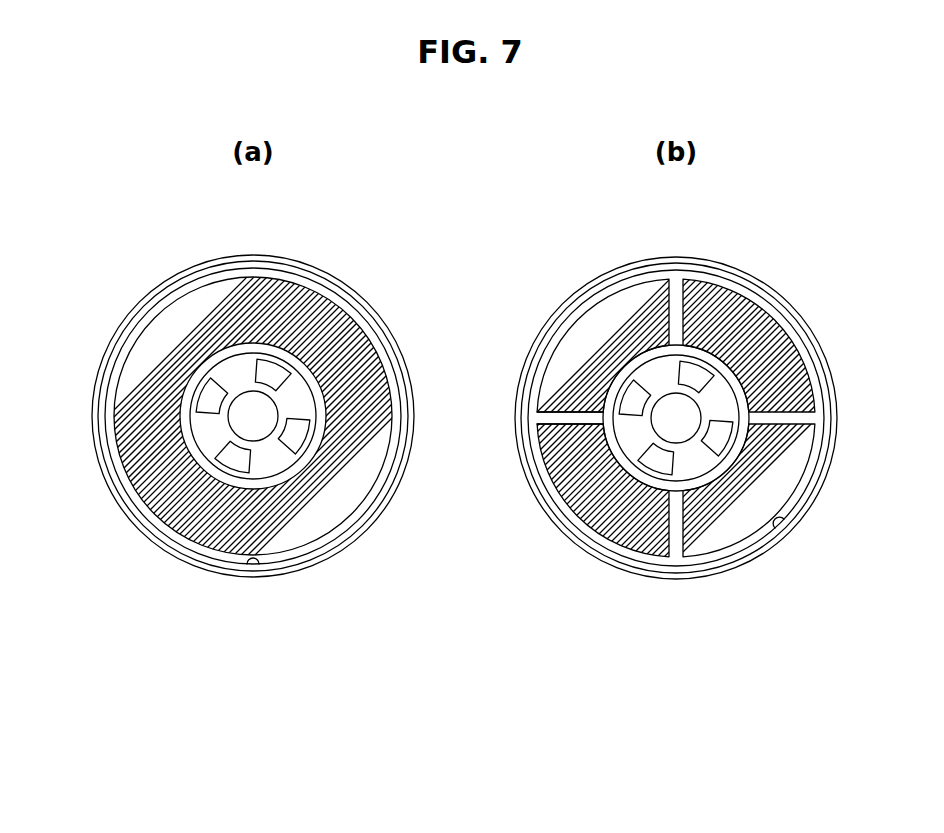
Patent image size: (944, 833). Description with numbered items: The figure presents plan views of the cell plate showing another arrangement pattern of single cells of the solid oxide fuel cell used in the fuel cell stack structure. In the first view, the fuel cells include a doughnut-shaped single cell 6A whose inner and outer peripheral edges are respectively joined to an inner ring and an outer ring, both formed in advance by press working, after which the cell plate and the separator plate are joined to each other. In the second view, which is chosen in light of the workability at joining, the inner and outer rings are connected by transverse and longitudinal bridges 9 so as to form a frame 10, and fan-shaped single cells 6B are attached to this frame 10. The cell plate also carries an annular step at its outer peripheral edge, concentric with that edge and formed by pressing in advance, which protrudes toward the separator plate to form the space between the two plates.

The doughnut-shaped single cell 6A is at (162, 340).
The fan-shaped single cell 6B is at (702, 540).
The bridge 9 is at (570, 421).
The frame 10 is at (487, 545).